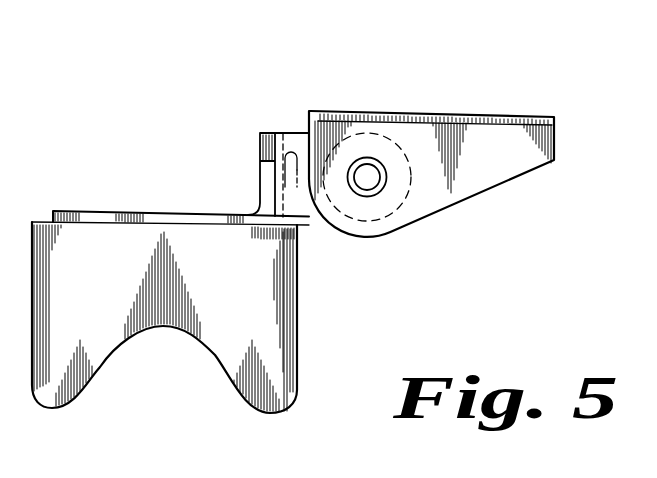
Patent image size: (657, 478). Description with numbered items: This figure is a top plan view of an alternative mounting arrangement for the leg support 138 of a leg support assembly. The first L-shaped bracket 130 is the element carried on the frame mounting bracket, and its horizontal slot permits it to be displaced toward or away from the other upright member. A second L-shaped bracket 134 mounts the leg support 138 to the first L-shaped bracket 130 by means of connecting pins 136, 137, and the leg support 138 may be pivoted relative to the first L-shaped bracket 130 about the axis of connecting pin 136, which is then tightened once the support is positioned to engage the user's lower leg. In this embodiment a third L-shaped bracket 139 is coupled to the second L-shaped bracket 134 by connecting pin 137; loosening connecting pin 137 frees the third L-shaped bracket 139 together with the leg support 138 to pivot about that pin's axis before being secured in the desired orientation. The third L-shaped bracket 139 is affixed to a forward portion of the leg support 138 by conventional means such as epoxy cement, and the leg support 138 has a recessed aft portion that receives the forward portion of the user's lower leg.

The first L-shaped bracket 130 is at (488, 192).
The second L-shaped bracket 134 is at (304, 133).
The connecting pin 136 is at (373, 193).
The connecting pin 137 is at (258, 170).
The leg support 138 is at (250, 287).
The third L-shaped bracket 139 is at (123, 212).